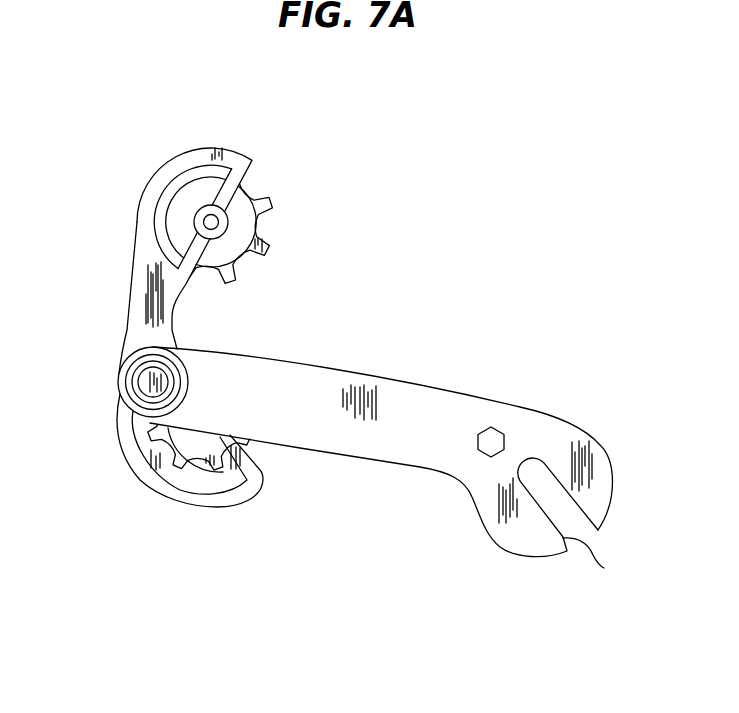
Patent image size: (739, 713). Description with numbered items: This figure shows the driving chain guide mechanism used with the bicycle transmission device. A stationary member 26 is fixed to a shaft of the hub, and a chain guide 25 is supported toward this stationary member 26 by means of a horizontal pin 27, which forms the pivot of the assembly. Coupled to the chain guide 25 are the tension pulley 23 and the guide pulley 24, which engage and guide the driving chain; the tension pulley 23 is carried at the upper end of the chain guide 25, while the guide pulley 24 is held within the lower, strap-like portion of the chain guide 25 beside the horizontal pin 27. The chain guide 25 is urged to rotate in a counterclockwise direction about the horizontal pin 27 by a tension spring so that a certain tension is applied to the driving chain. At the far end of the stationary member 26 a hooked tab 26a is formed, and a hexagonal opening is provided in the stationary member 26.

The tension pulley 23 is at (263, 203).
The guide pulley 24 is at (177, 478).
The chain guide 25 is at (141, 247).
The stationary member 26 is at (347, 443).
The hook tab of arm 26a is at (604, 568).
The horizontal pin 27 is at (150, 384).